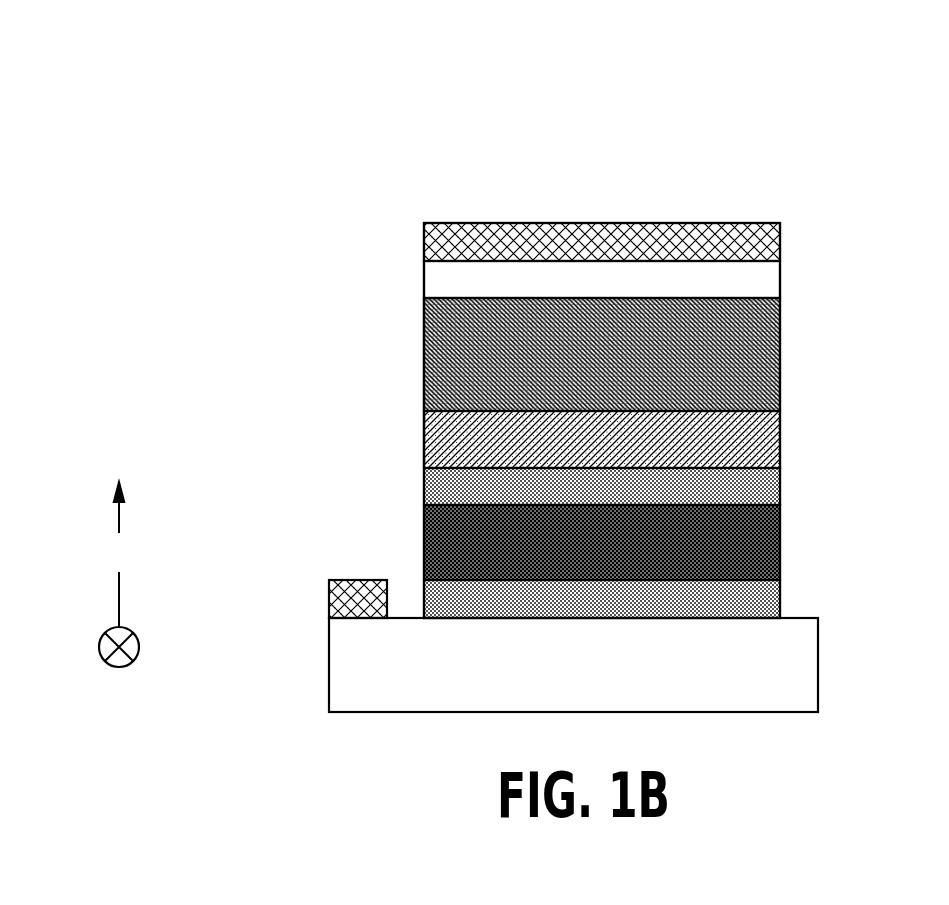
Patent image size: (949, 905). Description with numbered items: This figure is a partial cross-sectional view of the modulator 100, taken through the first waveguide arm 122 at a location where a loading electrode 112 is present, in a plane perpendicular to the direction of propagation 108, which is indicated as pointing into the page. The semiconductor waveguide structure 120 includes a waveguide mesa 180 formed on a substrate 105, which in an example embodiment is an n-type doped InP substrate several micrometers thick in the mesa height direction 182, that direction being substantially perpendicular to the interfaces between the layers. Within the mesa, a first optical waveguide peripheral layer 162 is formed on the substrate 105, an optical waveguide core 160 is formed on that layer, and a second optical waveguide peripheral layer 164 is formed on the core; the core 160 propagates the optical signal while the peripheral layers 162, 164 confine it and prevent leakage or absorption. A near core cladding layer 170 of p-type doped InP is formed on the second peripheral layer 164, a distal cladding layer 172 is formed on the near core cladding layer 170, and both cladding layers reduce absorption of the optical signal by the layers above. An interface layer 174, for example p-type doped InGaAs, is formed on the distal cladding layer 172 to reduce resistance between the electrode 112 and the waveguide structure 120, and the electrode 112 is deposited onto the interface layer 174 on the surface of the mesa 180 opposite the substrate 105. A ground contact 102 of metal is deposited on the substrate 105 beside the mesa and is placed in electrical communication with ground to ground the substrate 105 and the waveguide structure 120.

The modulator 100 is at (721, 96).
The ground contact 102 is at (355, 572).
The substrate 105 is at (818, 672).
The direction of propagation 108 is at (97, 647).
The loading electrode 112 is at (780, 240).
The semiconductor waveguide structure 120 is at (301, 424).
The waveguide arm 122 is at (325, 368).
The optical waveguide core 160 is at (780, 540).
The first optical waveguide peripheral layer 162 is at (780, 598).
The second optical waveguide peripheral layer 164 is at (780, 483).
The near core cladding layer 170 is at (780, 437).
The distal cladding layer 172 is at (780, 352).
The interface layer 174 is at (780, 278).
The waveguide mesa 180 is at (583, 146).
The mesa height direction 182 is at (118, 552).